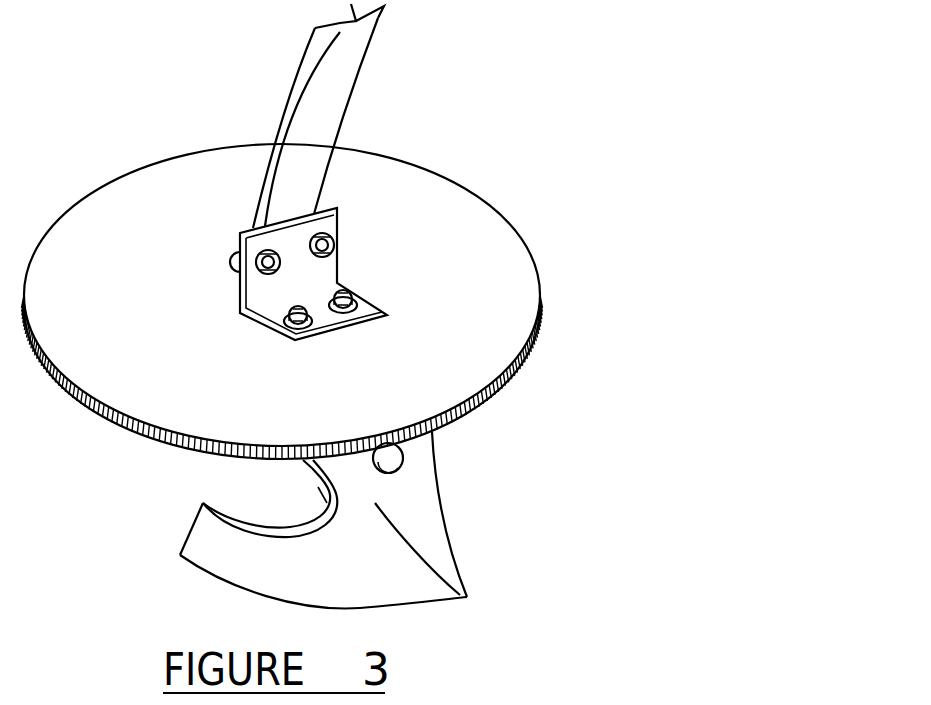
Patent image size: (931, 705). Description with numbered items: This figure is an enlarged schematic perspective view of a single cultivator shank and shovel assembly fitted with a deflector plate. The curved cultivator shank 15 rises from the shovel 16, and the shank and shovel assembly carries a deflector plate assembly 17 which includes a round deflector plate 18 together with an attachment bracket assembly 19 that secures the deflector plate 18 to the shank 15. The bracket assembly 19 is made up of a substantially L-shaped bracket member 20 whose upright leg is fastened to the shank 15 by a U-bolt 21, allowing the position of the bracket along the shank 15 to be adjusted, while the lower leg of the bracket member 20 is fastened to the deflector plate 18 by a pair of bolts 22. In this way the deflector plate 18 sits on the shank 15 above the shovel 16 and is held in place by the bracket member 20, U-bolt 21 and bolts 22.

The cultivator shank 15 is at (380, 58).
The shovel 16 is at (457, 528).
The deflector plate assembly 17 is at (217, 127).
The deflector plate 18 is at (410, 162).
The attachment bracket assembly 19 is at (430, 290).
The L-shaped bracket member 20 is at (395, 304).
The U-bolt 21 is at (347, 251).
The pair of bolts 22 is at (400, 322).